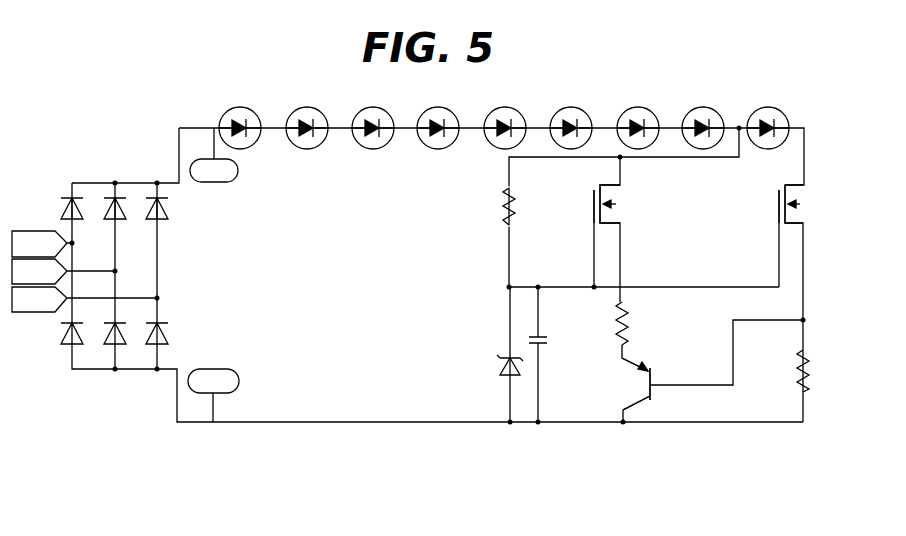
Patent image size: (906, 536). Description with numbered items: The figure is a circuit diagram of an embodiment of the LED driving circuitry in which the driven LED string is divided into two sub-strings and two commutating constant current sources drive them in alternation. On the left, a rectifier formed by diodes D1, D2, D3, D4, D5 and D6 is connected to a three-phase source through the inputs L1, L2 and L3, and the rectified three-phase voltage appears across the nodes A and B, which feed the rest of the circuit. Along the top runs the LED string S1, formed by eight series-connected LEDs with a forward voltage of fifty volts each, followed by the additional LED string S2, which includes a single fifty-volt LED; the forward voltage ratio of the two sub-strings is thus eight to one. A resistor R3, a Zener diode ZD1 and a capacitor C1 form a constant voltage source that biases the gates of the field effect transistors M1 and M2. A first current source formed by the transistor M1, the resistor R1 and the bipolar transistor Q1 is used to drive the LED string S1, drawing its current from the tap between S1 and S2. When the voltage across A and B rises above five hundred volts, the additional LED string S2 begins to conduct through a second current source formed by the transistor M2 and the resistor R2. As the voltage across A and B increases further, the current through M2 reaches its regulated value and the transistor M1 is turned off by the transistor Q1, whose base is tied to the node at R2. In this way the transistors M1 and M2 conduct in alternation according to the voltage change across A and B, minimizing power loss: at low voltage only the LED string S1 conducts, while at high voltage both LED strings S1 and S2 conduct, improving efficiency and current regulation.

The rectified output terminal A is at (214, 156).
The rectified output terminal B is at (213, 395).
The LED string S1 is at (372, 115).
The additional LED string S2 is at (674, 115).
The diode D1 is at (85, 221).
The diode D2 is at (85, 346).
The diode D3 is at (128, 221).
The diode D4 is at (128, 346).
The diode D5 is at (170, 221).
The diode D6 is at (170, 346).
The input L1 is at (42, 244).
The input L2 is at (63, 272).
The input L3 is at (84, 300).
The resistor R1 is at (642, 323).
The resistor R2 is at (786, 371).
The resistor R3 is at (531, 206).
The field effect transistor M1 is at (629, 204).
The field effect transistor M2 is at (773, 204).
The capacitor C1 is at (555, 333).
The Zener diode ZD1 is at (490, 356).
The bipolar transistor Q1 is at (623, 384).